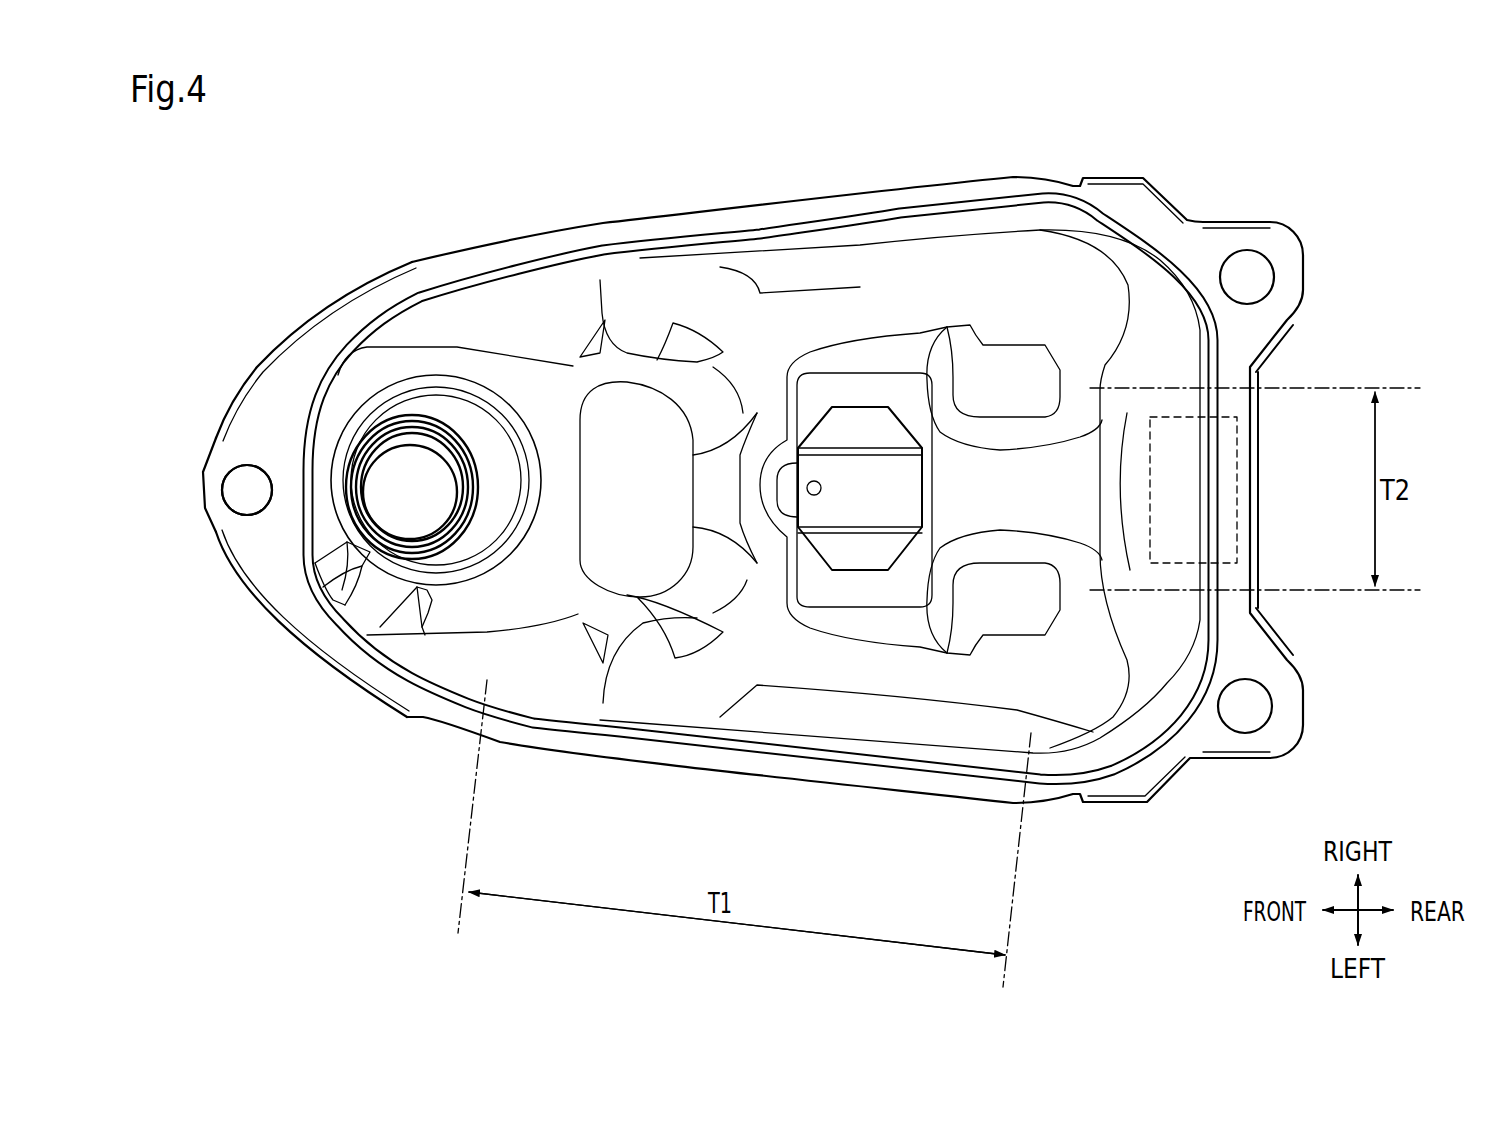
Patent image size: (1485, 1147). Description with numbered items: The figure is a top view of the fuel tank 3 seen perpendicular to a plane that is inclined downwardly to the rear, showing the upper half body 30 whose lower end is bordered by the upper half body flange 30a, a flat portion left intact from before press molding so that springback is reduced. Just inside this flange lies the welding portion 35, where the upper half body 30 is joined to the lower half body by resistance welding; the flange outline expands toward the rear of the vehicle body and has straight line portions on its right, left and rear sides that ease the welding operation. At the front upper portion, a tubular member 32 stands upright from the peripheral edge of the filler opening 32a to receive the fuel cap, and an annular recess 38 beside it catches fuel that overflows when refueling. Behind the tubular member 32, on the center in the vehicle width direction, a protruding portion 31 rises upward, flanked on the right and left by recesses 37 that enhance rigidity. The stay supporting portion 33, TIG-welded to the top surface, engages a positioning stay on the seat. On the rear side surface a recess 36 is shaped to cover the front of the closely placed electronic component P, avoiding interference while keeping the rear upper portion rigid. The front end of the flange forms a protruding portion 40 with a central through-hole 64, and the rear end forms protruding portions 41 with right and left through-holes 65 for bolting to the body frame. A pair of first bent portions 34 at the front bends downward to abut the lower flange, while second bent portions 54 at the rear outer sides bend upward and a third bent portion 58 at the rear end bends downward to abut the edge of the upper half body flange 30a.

The fuel tank 3 is at (310, 143).
The upper half body 30 is at (481, 238).
The upper half body flange 30a is at (255, 557).
The protruding portion 31 is at (623, 487).
The tubular member 32 is at (370, 440).
The filler opening 32a is at (337, 613).
The stay supporting portion 33 is at (877, 463).
The first bent portions 34 is at (255, 385).
The welding portion 35 is at (820, 222).
The recess 36 is at (1132, 441).
The recesses 37 is at (643, 328).
The annular recess 38 is at (432, 398).
The protruding portion 40 is at (210, 482).
The protruding portions 41 is at (1293, 276).
The second bent portions 54 is at (1170, 193).
The third bent portion 58 is at (1257, 530).
The through-hole 64 is at (245, 495).
The through-holes 65 is at (1247, 277).
The electronic component P is at (1238, 433).